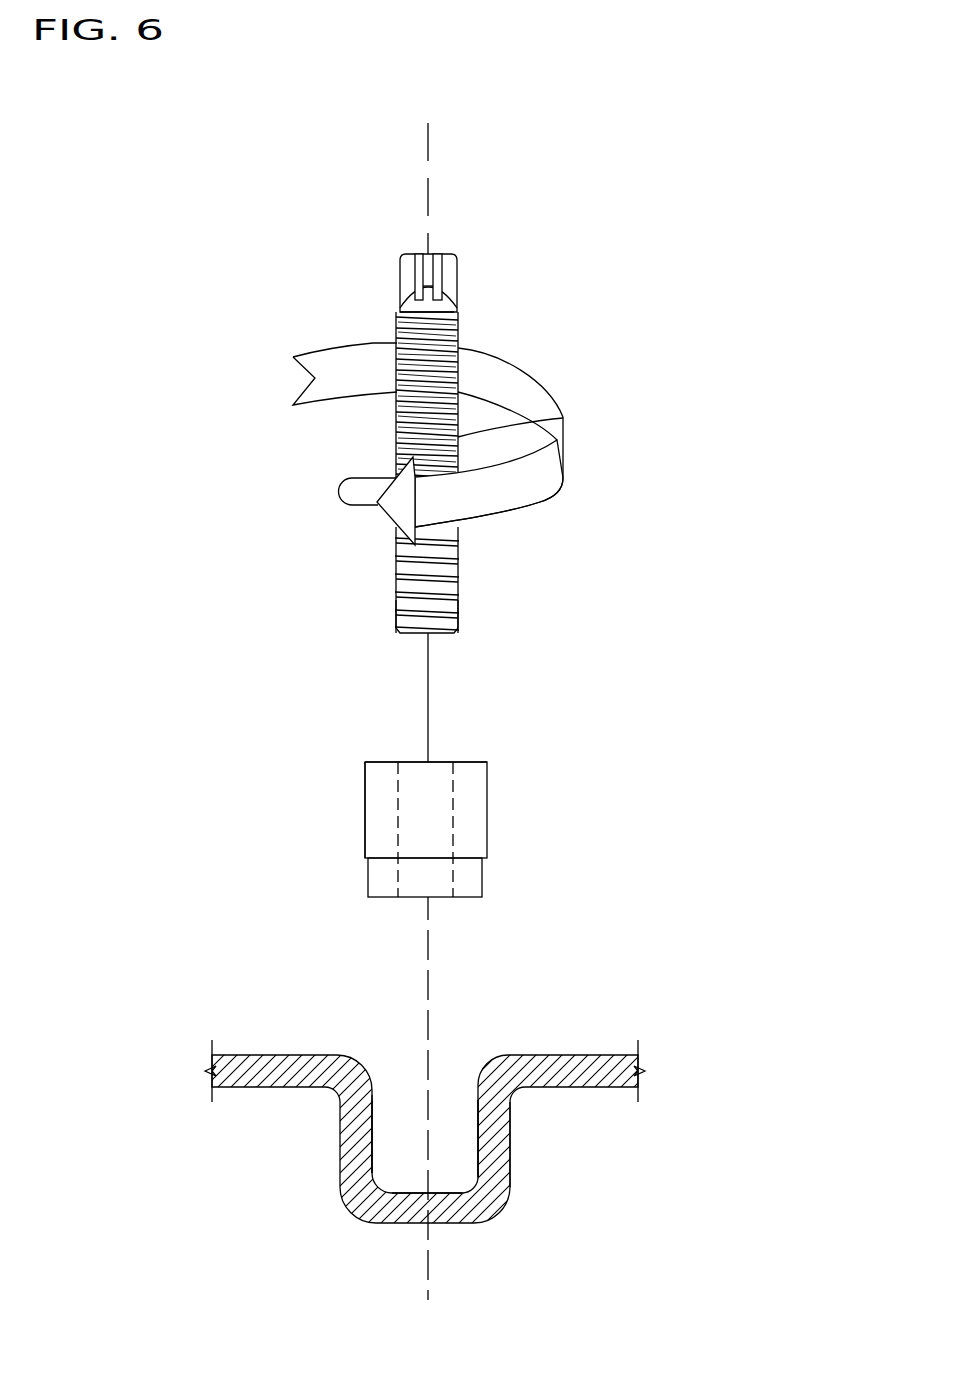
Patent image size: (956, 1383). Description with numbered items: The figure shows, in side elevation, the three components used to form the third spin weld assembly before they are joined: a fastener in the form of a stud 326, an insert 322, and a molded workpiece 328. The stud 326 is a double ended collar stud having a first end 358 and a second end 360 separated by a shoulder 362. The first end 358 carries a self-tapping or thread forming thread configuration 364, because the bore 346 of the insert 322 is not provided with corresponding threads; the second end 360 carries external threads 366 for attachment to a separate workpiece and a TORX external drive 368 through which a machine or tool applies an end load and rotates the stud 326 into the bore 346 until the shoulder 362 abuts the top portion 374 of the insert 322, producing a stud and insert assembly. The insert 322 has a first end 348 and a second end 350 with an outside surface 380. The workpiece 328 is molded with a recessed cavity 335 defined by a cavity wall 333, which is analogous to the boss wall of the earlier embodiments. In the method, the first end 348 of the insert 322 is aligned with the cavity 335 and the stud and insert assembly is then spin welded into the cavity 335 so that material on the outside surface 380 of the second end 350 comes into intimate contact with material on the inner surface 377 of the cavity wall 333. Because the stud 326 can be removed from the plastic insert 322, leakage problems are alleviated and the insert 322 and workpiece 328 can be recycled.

The insert 322 is at (410, 793).
The stud 326 is at (432, 444).
The workpiece 328 is at (436, 1098).
The cavity wall 333 is at (497, 1147).
The recessed cavity 335 is at (445, 1087).
The bore 346 is at (433, 775).
The first end of the insert 348 is at (482, 877).
The second end of the insert 350 is at (382, 805).
The first end of the stud 358 is at (457, 570).
The second end of the stud 360 is at (373, 340).
The shoulder 362 is at (353, 495).
The self-tapping thread configuration 364 is at (400, 585).
The external threads 366 is at (433, 444).
The external drive 368 is at (428, 235).
The top portion of the insert 374 is at (382, 762).
The inner surface of the cavity wall 377 is at (372, 1127).
The outside surface of the second end of the insert 380 is at (365, 819).